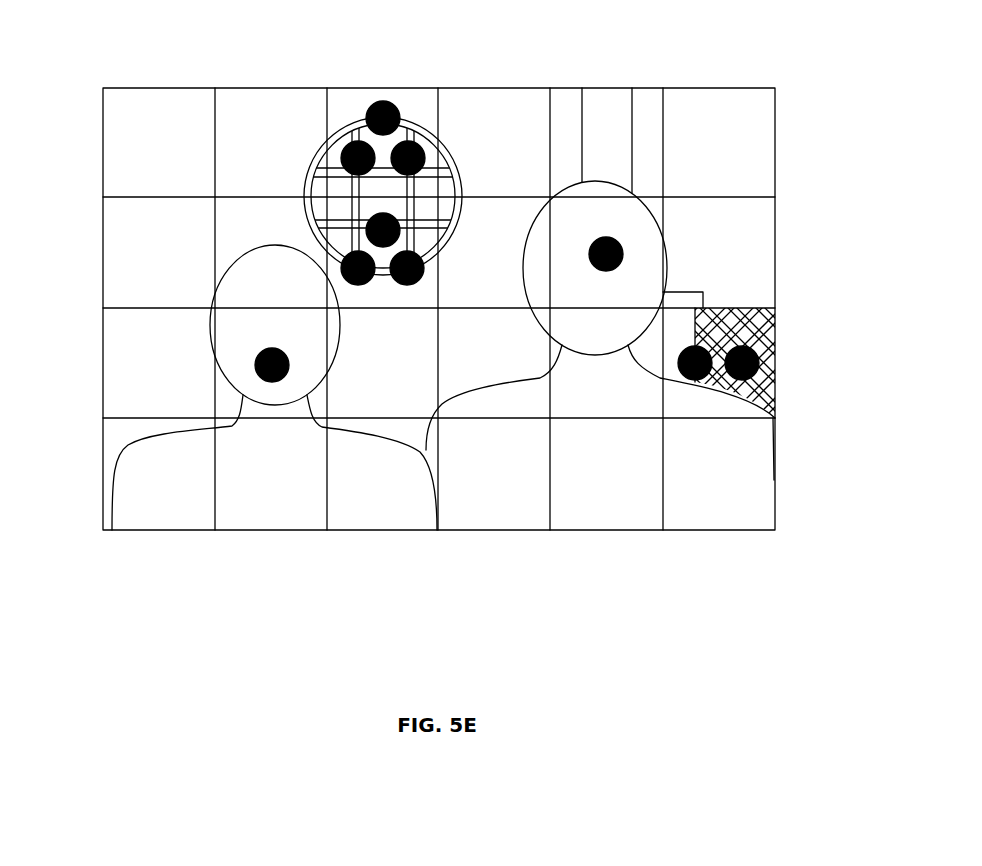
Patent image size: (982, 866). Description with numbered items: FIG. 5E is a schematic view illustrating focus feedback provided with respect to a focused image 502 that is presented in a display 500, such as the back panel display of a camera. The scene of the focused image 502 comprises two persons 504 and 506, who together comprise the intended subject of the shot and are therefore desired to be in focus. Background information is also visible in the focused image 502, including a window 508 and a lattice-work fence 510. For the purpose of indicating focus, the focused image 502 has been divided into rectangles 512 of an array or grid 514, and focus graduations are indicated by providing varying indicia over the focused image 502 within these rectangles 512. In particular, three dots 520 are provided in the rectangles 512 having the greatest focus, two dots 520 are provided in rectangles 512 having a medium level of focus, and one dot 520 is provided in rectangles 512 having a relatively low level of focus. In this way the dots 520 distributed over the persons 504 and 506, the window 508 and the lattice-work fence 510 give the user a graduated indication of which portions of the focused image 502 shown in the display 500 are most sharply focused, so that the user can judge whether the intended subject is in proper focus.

The display 500 is at (818, 88).
The focused image 502 is at (470, 88).
The person 504 is at (274, 387).
The person 506 is at (600, 284).
The window 508 is at (482, 156).
The lattice-work fence 510 is at (741, 284).
The rectangles 512 is at (118, 120).
The grid 514 is at (190, 106).
The dots 520 is at (375, 103).